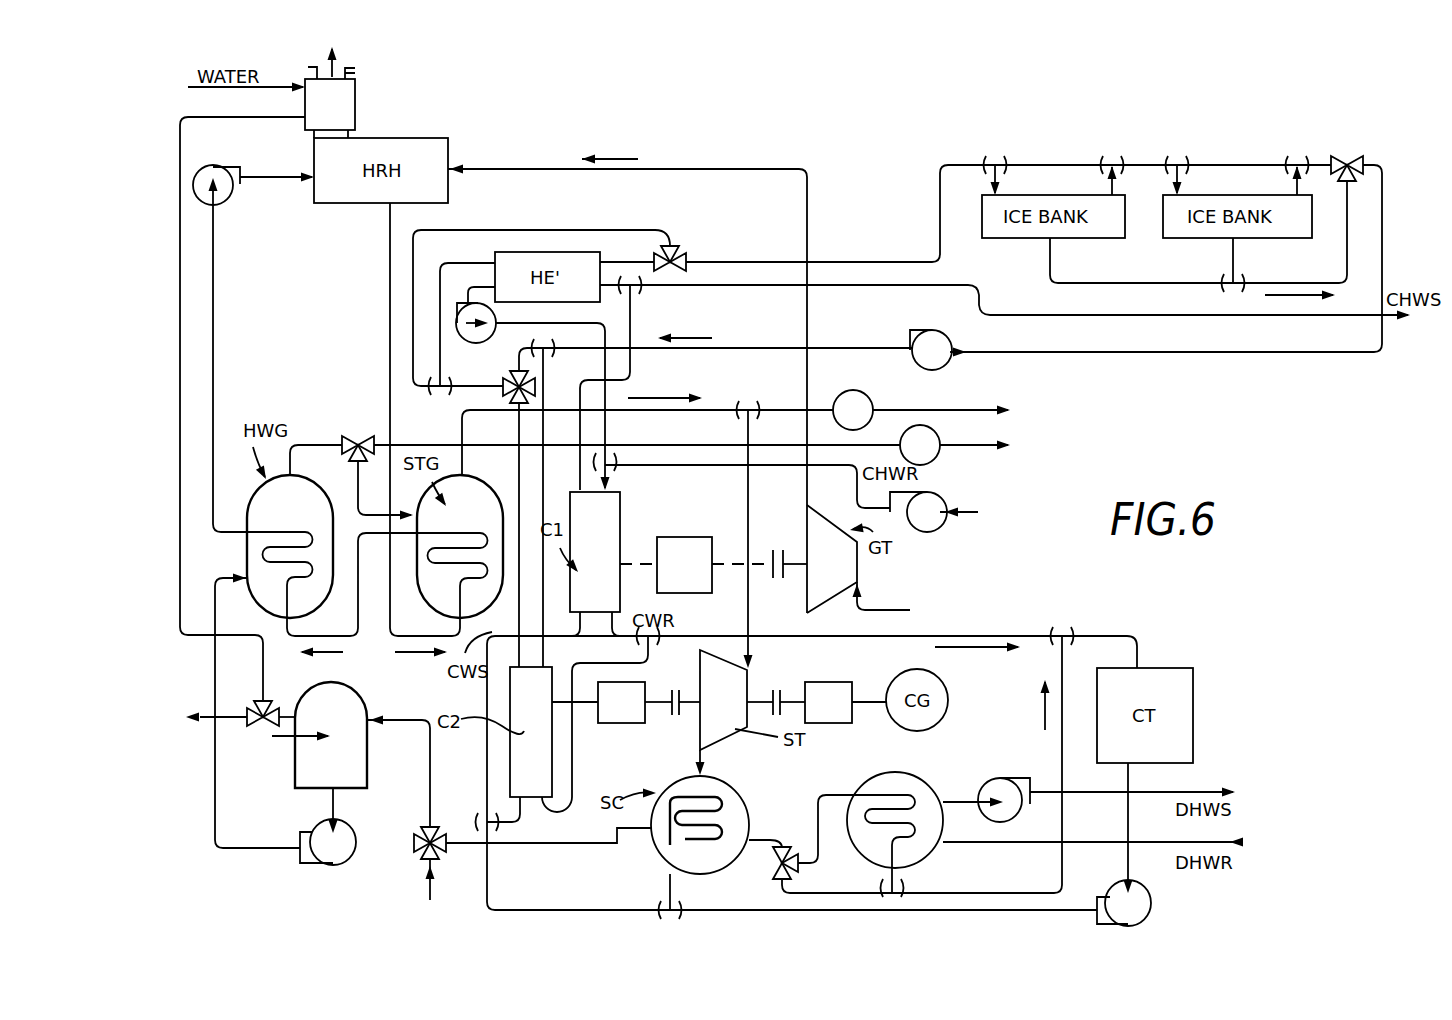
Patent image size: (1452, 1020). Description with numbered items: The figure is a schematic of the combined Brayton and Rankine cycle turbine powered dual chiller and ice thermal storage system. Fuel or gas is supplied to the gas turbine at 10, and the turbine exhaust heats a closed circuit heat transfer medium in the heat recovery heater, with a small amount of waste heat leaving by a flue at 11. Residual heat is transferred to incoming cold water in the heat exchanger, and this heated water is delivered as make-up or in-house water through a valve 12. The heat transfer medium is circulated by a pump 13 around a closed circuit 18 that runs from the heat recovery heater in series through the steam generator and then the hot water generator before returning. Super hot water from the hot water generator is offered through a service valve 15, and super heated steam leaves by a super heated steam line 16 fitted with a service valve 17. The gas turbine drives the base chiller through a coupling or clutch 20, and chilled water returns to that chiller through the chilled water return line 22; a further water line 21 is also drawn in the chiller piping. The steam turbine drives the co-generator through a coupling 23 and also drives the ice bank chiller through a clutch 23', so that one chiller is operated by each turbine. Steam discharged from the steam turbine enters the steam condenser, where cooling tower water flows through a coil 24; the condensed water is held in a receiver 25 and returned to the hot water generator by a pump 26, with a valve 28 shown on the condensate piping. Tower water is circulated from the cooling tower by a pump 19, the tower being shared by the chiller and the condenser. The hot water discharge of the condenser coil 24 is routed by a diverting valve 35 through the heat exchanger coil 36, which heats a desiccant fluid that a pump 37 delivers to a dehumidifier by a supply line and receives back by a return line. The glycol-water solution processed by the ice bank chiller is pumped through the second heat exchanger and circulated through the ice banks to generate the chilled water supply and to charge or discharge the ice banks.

The fuel supply 10 is at (896, 612).
The flue 11 is at (356, 71).
The valve 12 is at (263, 728).
The pump 13 is at (224, 196).
The service valve 15 is at (940, 438).
The super heated steam line 16 is at (746, 347).
The service valve 17 is at (873, 402).
The closed circuit 18 is at (388, 300).
The pump 19 is at (1151, 908).
The coupling 20 is at (772, 548).
The water line 21 is at (580, 425).
The chilled water return line 22 is at (704, 468).
The coupling 23 is at (788, 681).
The clutch 23' is at (653, 727).
The coil 24 is at (720, 803).
The receiver 25 is at (330, 715).
The pump 26 is at (334, 866).
The valve 28 is at (415, 843).
The diverting valve 35 is at (777, 871).
The heat exchanger coil 36 is at (916, 796).
The pump 37 is at (1007, 797).